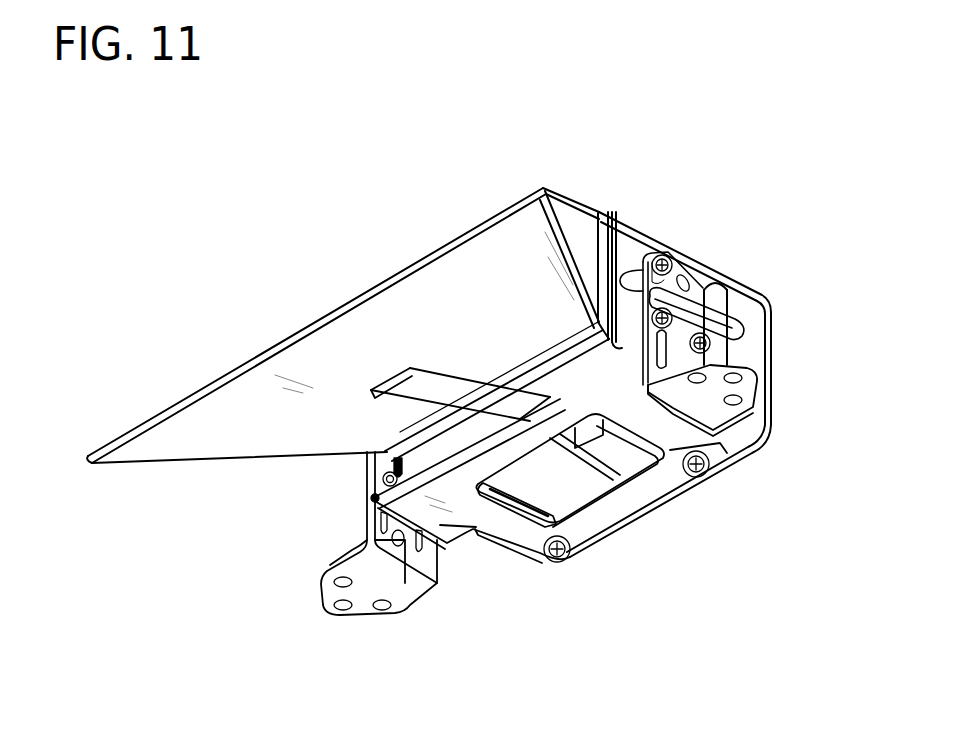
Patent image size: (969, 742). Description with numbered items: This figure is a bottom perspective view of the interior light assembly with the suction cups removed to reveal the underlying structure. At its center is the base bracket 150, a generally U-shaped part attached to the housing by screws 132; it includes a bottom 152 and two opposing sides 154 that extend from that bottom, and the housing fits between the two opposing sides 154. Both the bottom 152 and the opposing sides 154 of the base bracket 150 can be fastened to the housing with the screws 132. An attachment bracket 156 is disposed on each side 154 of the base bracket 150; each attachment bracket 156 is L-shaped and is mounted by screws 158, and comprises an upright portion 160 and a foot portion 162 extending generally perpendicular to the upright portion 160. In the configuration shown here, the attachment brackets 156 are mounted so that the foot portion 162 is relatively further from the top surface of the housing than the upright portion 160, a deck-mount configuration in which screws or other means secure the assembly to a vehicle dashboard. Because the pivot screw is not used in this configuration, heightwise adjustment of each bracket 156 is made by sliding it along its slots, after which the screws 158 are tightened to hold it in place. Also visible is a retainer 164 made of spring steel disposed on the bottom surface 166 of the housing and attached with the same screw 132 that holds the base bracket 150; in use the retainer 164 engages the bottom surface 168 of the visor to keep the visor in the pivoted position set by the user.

The screws 132 is at (553, 477).
The base bracket 150 is at (475, 529).
The bottom 152 is at (617, 512).
The opposing sides 154 is at (693, 270).
The attachment bracket 156 is at (348, 523).
The screws 158 is at (738, 350).
The upright portion 160 is at (705, 315).
The foot portion 162 is at (725, 420).
The retainer 164 is at (412, 388).
The bottom surface 166 is at (617, 510).
The bottom surface 168 is at (369, 340).